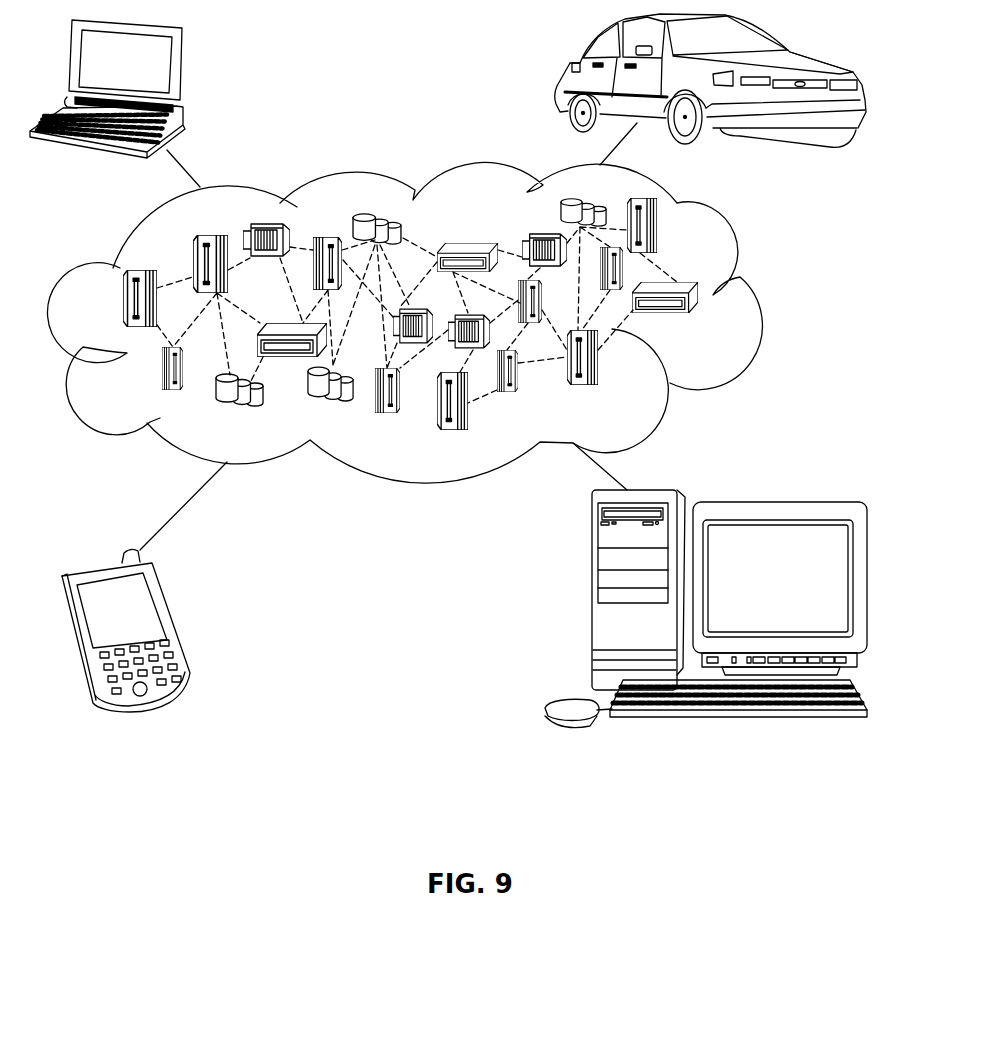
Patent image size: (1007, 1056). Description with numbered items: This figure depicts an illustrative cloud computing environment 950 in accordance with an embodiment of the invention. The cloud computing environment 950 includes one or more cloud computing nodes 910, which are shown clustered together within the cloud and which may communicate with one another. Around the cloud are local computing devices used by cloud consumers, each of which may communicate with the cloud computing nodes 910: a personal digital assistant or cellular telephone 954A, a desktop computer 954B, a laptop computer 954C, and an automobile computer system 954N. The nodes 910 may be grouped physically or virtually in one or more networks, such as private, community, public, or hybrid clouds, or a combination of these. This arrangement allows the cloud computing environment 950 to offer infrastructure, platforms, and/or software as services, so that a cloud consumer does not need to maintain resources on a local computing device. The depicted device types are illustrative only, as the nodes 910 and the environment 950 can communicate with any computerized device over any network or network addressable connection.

The cloud computing environment 950 is at (742, 260).
The cloud computing nodes 910 is at (722, 319).
The personal digital assistant (PDA) or cellular telephone 954A is at (173, 620).
The desktop computer 954B is at (592, 598).
The laptop computer 954C is at (180, 60).
The automobile computer system 954N is at (568, 60).